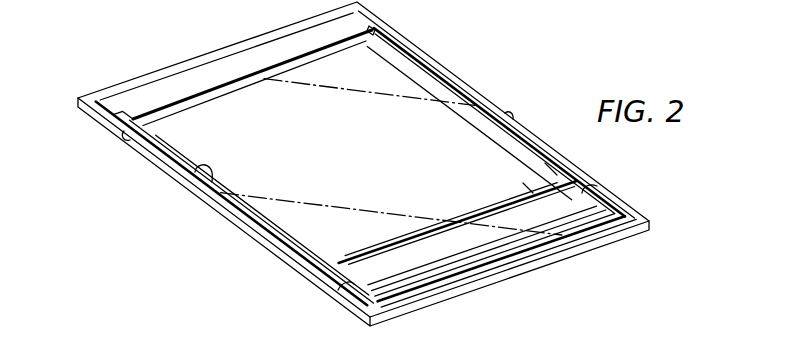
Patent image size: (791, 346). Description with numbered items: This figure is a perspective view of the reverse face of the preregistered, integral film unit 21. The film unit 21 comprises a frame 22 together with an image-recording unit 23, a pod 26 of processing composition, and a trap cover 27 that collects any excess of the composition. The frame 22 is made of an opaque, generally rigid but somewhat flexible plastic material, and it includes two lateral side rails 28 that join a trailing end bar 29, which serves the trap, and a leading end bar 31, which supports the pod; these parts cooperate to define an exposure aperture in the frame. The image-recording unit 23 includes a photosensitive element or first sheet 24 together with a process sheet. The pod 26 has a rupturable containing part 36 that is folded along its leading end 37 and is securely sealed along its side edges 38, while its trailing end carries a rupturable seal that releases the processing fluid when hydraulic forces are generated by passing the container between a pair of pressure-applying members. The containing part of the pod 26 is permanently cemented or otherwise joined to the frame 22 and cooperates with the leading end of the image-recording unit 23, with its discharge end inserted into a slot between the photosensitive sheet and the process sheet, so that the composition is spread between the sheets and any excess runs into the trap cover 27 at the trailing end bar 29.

The film unit 21 is at (605, 184).
The frame 22 is at (470, 83).
The image-recording unit 23 is at (388, 78).
The photosensitive element 24 is at (200, 170).
The pod 26 is at (386, 274).
The trap cover 27 is at (204, 87).
The lateral side rails 28 is at (126, 138).
The trailing end bar 29 is at (133, 82).
The leading end bar 31 is at (500, 264).
The rupturable containing part 36 is at (438, 258).
The leading end of containing part 37 is at (567, 229).
The side edges of containing part 38 is at (345, 286).